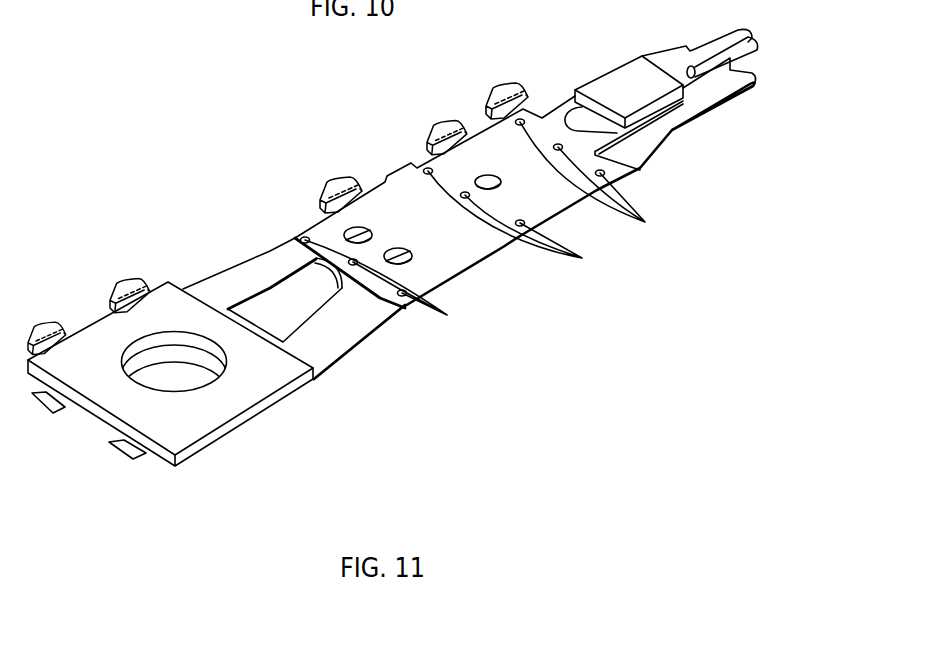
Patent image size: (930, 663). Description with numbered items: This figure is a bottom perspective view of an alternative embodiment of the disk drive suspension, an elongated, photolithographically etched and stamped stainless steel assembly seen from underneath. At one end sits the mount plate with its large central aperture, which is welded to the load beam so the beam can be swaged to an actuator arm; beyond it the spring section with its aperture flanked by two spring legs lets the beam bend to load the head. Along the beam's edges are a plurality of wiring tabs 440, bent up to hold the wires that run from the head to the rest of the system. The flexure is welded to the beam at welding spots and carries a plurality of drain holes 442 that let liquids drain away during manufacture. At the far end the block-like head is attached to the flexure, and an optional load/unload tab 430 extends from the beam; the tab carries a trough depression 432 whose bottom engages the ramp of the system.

The wiring tabs 440 is at (110, 300).
The drain holes 442 is at (398, 248).
The load/unload tab 430 is at (710, 50).
The trough depression 432 is at (750, 36).